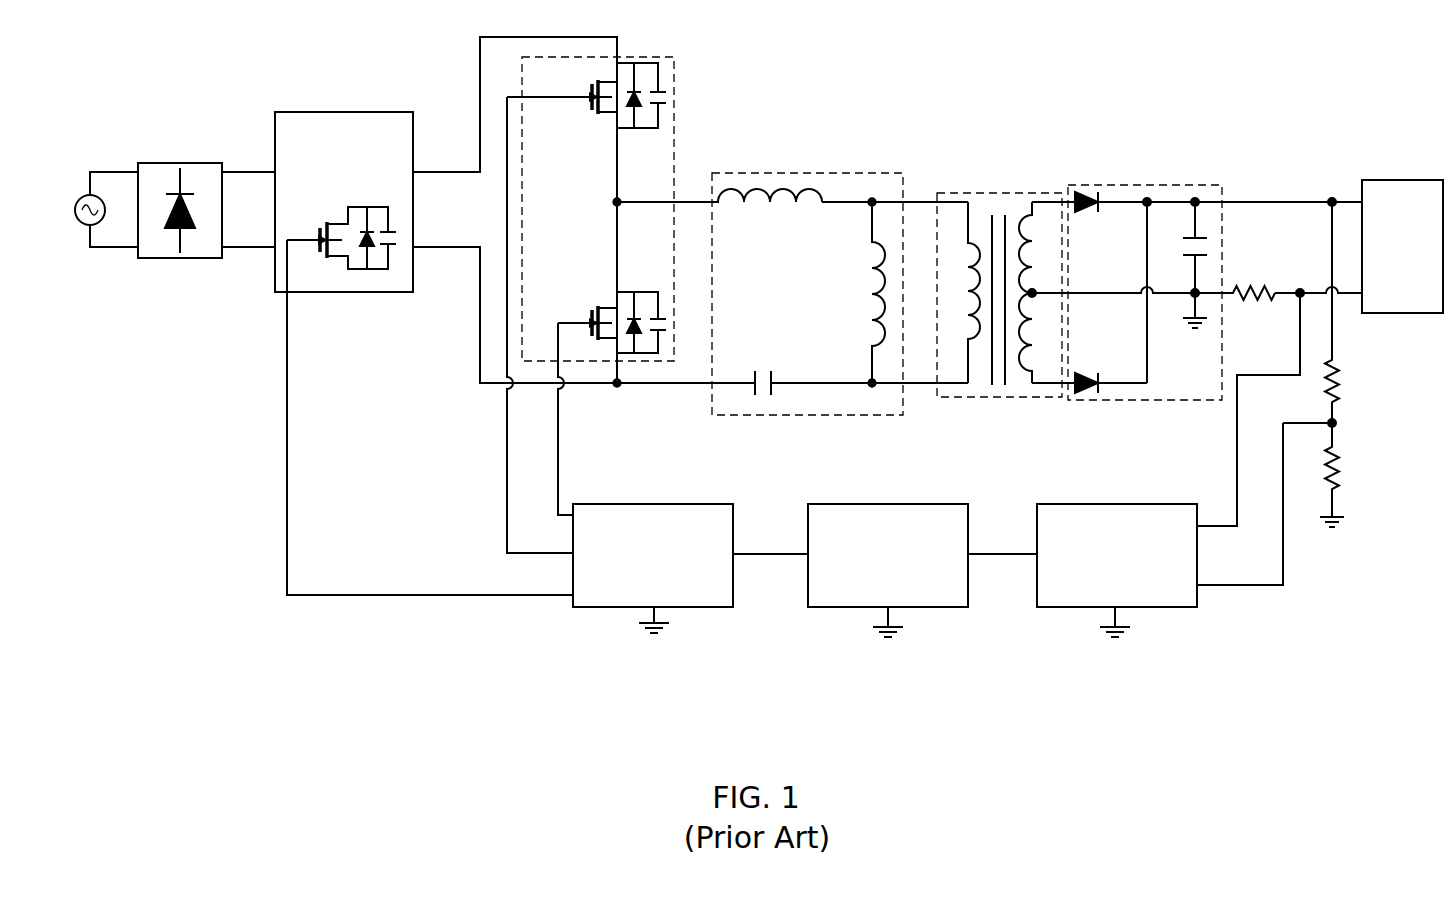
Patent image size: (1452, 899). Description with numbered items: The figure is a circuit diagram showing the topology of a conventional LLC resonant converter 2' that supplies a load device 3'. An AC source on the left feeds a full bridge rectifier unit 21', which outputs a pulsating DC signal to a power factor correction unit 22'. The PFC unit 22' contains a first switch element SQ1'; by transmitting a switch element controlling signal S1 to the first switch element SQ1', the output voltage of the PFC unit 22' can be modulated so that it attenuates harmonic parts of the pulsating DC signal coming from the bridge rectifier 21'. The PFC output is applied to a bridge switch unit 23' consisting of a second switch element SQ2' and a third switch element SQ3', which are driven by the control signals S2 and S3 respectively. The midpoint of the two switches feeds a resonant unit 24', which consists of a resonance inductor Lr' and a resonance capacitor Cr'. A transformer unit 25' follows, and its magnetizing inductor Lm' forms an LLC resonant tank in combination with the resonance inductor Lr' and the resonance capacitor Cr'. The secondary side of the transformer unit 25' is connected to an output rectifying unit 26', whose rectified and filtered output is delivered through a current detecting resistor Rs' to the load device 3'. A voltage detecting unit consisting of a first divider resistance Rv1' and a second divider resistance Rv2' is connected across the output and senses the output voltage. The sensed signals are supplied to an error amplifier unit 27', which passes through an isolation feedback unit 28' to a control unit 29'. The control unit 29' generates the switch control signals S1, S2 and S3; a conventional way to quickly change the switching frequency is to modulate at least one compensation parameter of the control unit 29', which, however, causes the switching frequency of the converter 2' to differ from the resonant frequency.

The conventional LLC resonant converter 2' is at (718, 363).
The load device 3' is at (1402, 212).
The full bridge rectifier unit 21' is at (212, 255).
The power factor correction (PFC) unit 22' is at (313, 174).
The switching unit 23' is at (634, 194).
The resonant unit 24' is at (807, 255).
The transformer unit 25' is at (999, 256).
The output rectifying unit 26' is at (1181, 262).
The error amplifier unit 27' is at (1151, 587).
The isolation feedback unit 28' is at (924, 587).
The control unit 29' is at (690, 583).
The first switch element SQ1' is at (341, 277).
The second switch element SQ2' is at (586, 135).
The third switch element SQ3' is at (596, 289).
The control signal S1 is at (309, 520).
The control signal S2 is at (488, 419).
The control signal S3 is at (574, 419).
The resonance inductor Lr' is at (719, 214).
The magnetizing inductor Lm' is at (851, 292).
The resonance capacitor Cr' is at (764, 365).
The current detecting resistor Rs' is at (1235, 276).
The first divider resistance Rv1' is at (1361, 312).
The second divider resistance Rv2' is at (1358, 475).